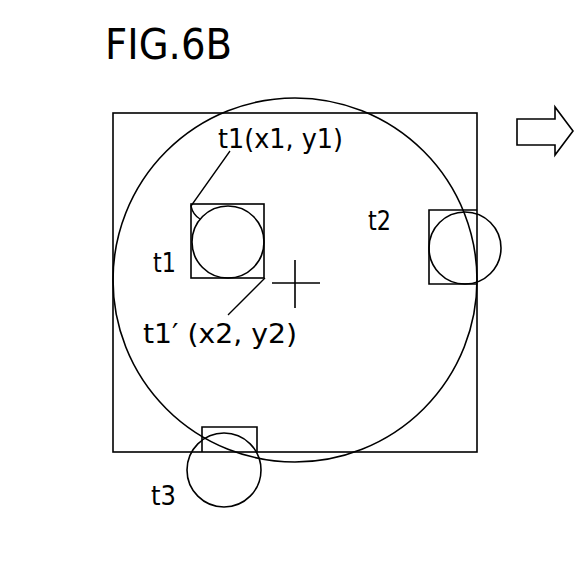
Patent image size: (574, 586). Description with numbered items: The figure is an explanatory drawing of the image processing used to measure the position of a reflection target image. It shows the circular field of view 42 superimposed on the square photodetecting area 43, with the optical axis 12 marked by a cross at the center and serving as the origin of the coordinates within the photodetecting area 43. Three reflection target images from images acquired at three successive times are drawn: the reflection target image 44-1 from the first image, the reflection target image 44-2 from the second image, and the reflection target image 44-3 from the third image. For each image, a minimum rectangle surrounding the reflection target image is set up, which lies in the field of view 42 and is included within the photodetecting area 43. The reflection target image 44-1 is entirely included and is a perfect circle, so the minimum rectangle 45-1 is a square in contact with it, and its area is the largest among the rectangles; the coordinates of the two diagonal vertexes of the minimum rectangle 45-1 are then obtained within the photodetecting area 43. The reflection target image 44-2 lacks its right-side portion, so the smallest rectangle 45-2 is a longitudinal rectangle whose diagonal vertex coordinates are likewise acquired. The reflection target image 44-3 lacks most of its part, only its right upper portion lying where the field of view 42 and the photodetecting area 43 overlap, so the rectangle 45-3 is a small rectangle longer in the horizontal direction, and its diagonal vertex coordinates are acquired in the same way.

The field of view 42 is at (407, 132).
The photodetecting area 43 is at (478, 363).
The optical axis 12 is at (297, 287).
The reflection target image 44-1 is at (192, 207).
The reflection target image 44-2 is at (441, 284).
The reflection target image 44-3 is at (247, 438).
The minimum rectangle 45-1 is at (265, 212).
The smallest rectangle 45-2 is at (452, 208).
The minimum rectangle 45-3 is at (232, 428).